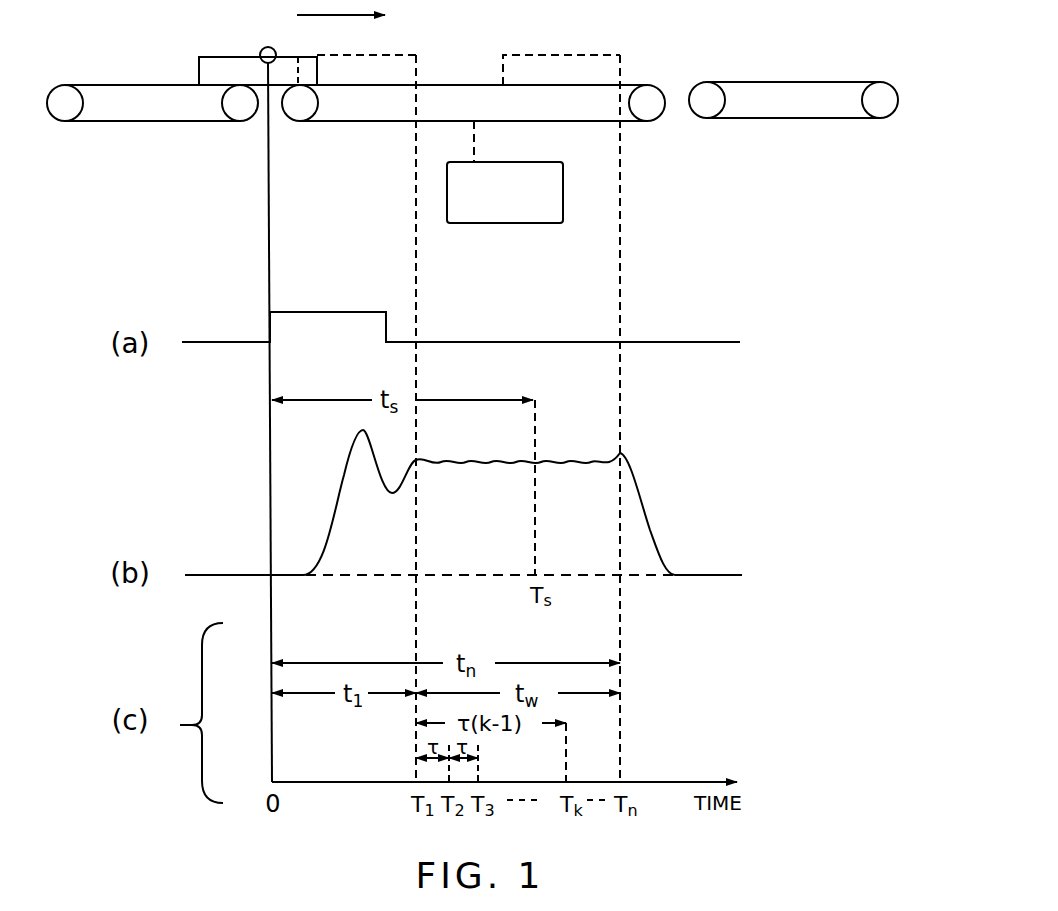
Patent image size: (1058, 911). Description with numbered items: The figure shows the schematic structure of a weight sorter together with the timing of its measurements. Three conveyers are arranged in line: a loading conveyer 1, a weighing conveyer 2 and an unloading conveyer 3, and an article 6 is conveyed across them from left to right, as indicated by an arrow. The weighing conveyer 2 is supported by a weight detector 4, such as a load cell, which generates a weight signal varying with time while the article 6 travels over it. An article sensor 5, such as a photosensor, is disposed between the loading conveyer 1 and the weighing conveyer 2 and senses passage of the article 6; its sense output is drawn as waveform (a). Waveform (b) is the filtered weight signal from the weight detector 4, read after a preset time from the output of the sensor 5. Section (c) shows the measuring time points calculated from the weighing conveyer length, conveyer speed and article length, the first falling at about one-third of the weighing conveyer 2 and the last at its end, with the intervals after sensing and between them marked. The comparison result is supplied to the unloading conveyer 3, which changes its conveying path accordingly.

The loading conveyer 1 is at (126, 84).
The weighing conveyer 2 is at (470, 84).
The unloading conveyer 3 is at (808, 82).
The weight detector 4 is at (563, 190).
The article sensor 5 is at (268, 47).
The article 6 is at (205, 57).